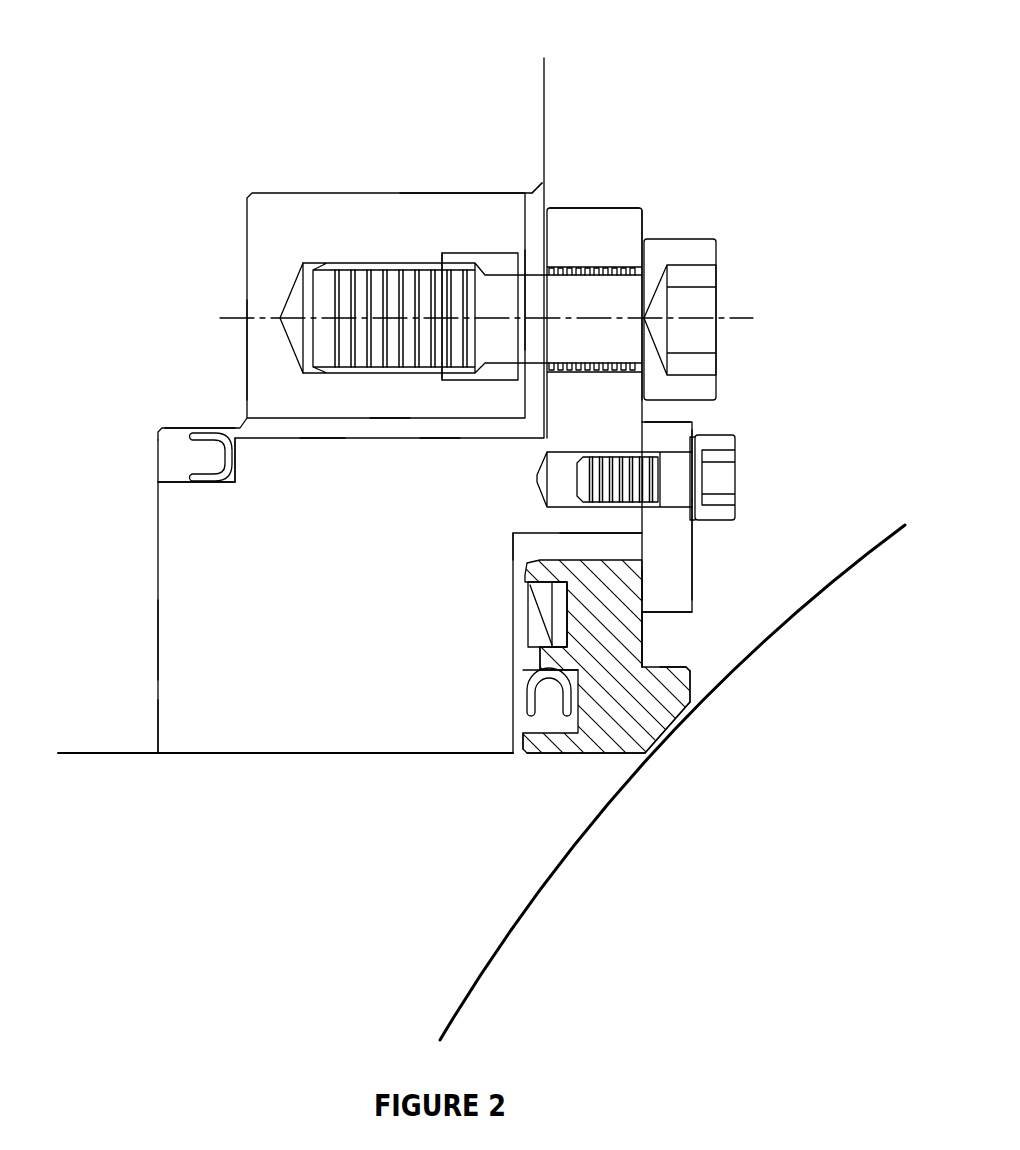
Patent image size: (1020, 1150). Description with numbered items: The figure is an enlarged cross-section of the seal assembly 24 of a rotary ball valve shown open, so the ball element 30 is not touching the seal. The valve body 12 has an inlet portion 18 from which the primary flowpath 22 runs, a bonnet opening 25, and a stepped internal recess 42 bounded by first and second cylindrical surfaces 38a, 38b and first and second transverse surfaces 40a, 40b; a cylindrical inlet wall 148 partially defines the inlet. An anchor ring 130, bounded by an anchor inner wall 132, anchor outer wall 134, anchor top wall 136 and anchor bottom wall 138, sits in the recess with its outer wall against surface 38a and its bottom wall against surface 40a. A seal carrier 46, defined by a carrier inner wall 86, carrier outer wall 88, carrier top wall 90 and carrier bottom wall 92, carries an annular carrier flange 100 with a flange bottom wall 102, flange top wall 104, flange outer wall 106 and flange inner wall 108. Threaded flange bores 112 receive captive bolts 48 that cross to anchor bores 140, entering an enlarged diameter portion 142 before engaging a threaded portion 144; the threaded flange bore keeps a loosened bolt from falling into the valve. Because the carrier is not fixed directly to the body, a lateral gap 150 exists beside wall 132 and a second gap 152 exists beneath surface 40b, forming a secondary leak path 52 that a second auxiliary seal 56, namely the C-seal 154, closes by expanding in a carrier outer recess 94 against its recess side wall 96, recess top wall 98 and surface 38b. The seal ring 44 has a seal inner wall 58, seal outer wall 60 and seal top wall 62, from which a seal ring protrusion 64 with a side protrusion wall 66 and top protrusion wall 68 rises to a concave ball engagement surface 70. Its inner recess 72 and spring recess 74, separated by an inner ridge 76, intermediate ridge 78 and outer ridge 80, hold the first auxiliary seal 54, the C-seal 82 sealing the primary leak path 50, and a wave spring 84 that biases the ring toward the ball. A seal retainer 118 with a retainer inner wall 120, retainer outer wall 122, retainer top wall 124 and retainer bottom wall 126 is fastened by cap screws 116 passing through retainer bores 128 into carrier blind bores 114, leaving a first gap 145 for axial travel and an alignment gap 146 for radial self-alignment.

The valve body 12 is at (125, 655).
The inlet portion 18 is at (80, 871).
The primary flowpath 22 is at (148, 916).
The seal assembly 24 is at (702, 107).
The bonnet opening 25 is at (620, 73).
The ball element 30 is at (718, 840).
The first cylindrical surface 38a is at (347, 192).
The second cylindrical surface 38b is at (175, 445).
The first transverse surface 40a is at (243, 222).
The second transverse surface 40b is at (158, 568).
The internal recess 42 is at (324, 780).
The seal ring 44 is at (638, 730).
The seal carrier 46 is at (323, 592).
The captive bolt 48 is at (716, 253).
The primary leak path 50 is at (517, 755).
The secondary leak path 52 is at (163, 758).
The first auxiliary seal 54 is at (547, 697).
The second auxiliary seal 56 is at (200, 457).
The seal inner wall 58 is at (578, 755).
The seal outer wall 60 is at (630, 556).
The seal top wall 62 is at (645, 637).
The seal ring protrusion 64 is at (650, 713).
The side protrusion wall 66 is at (675, 667).
The top protrusion wall 68 is at (693, 680).
The ball engagement surface 70 is at (683, 715).
The inner recess 72 is at (535, 722).
The spring recess 74 is at (525, 637).
The inner ridge 76 is at (543, 743).
The intermediate ridge 78 is at (535, 662).
The outer ridge 80 is at (535, 573).
The C-seal 82 is at (523, 683).
The wave spring 84 is at (525, 610).
The carrier inner wall 86 is at (287, 755).
The carrier outer wall 88 is at (322, 437).
The carrier top wall 90 is at (160, 640).
The carrier bottom wall 92 is at (515, 545).
The carrier outer recess 94 is at (183, 433).
The recess side wall 96 is at (177, 485).
The recess top wall 98 is at (236, 450).
The carrier flange 100 is at (603, 232).
The flange bottom wall 102 is at (535, 228).
The flange top wall 104 is at (645, 222).
The flange outer wall 106 is at (608, 210).
The flange inner wall 108 is at (519, 533).
The flange bore 112 is at (600, 265).
The carrier blind bore 114 is at (563, 450).
The cap screw 116 is at (736, 460).
The seal retainer 118 is at (670, 595).
The retainer inner wall 120 is at (677, 613).
The retainer outer wall 122 is at (673, 420).
The retainer top wall 124 is at (693, 537).
The retainer bottom wall 126 is at (640, 540).
The retainer bore 128 is at (672, 448).
The anchor ring 130 is at (358, 246).
The anchor inner wall 132 is at (390, 418).
The anchor outer wall 134 is at (405, 194).
The anchor top wall 136 is at (533, 210).
The anchor bottom wall 138 is at (247, 348).
The anchor bore 140 is at (492, 268).
The enlarged diameter portion 142 is at (465, 258).
The threaded portion 144 is at (305, 263).
The first gap 145 is at (523, 737).
The alignment gap 146 is at (640, 577).
The inlet wall 148 is at (95, 755).
The lateral gap 150 is at (438, 428).
The second gap 152 is at (158, 720).
The C-seal 154 is at (222, 478).